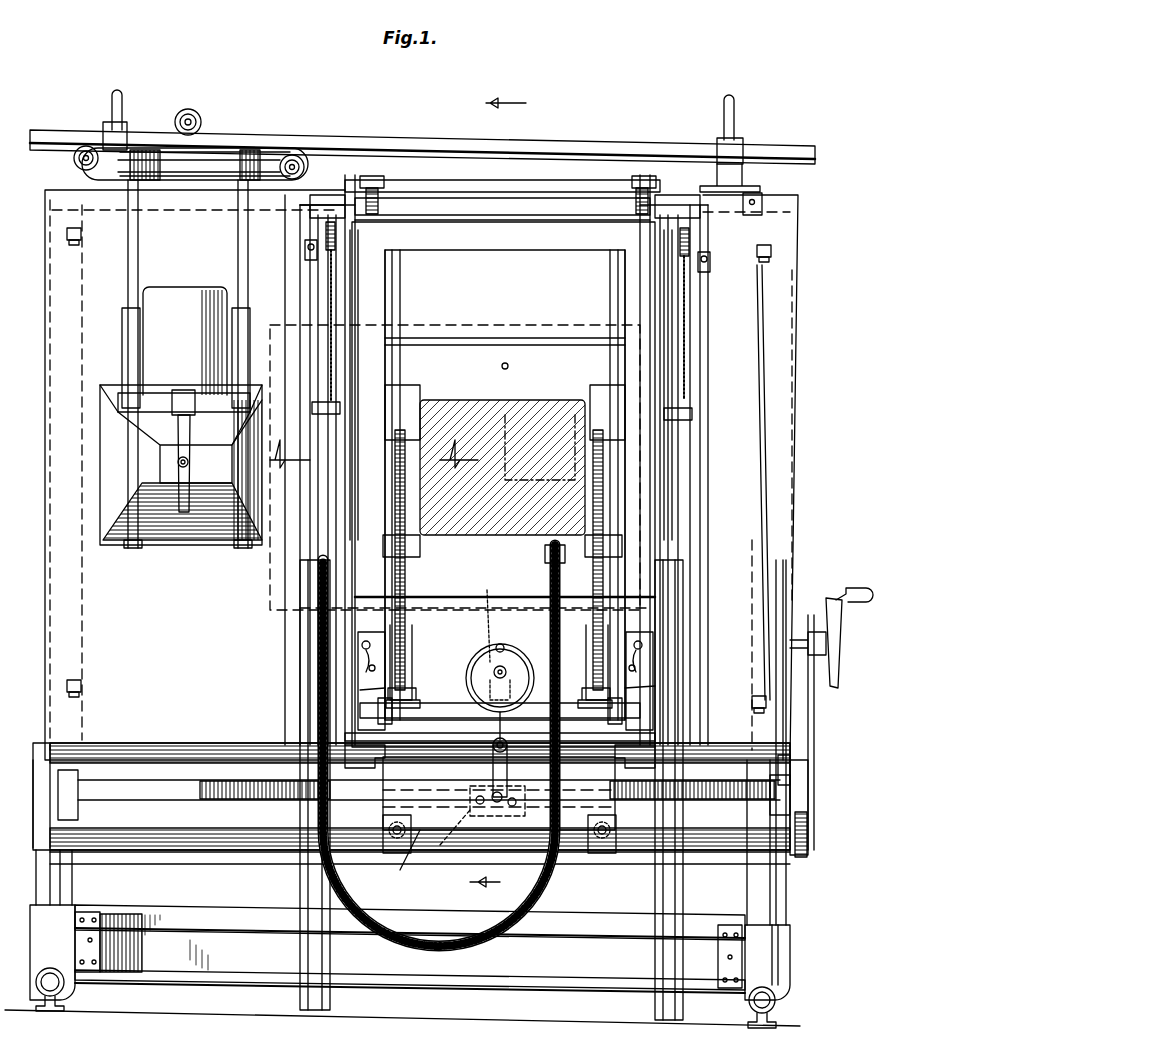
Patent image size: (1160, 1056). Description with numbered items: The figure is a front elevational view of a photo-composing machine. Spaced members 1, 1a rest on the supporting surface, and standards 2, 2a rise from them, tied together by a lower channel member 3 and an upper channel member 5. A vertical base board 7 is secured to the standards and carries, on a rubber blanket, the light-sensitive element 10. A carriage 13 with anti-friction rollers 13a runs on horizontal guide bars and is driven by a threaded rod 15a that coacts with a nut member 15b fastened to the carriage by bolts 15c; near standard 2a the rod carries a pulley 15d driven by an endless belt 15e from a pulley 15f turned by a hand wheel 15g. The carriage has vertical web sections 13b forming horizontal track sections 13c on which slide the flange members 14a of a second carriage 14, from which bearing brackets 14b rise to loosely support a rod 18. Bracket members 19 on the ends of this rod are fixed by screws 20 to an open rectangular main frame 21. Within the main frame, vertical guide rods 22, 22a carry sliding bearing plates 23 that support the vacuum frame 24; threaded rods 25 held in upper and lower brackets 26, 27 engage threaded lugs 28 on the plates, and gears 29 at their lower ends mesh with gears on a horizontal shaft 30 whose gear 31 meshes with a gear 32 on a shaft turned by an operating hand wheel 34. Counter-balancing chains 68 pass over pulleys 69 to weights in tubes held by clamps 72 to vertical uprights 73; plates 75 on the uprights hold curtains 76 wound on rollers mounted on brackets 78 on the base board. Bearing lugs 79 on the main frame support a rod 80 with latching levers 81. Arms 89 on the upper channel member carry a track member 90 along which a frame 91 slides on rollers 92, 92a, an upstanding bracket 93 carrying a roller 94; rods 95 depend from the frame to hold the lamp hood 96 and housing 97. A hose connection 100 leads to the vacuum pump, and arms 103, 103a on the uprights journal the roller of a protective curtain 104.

The spaced member 1 is at (60, 990).
The spaced member 1a is at (750, 1012).
The standard 2 is at (60, 880).
The standard 2a is at (790, 890).
The lower channel member 3 is at (475, 990).
The upper channel member 5 is at (498, 494).
The base board 7 is at (373, 454).
The light-sensitive element 10 is at (270, 605).
The carriage 13 is at (160, 845).
The anti-friction rollers 13a is at (397, 855).
The vertical web sections 13b is at (612, 855).
The horizontal track sections 13c is at (497, 763).
The second carriage 14 is at (450, 756).
The flange members 14a is at (392, 744).
The bearing brackets 14b is at (398, 712).
The threaded rod 15a is at (275, 808).
The nut member 15b is at (434, 862).
The bolts 15c is at (444, 827).
The pulley 15d is at (807, 822).
The endless belt 15e is at (814, 740).
The pulley 15f is at (810, 618).
The hand wheel 15g is at (858, 578).
The rod 18 is at (490, 750).
The bracket members 19 is at (358, 640).
The screws 20 is at (366, 660).
The main frame 21 is at (545, 250).
The vertical guide rod 22 is at (398, 292).
The vertical guide rod 22a is at (612, 292).
The bearing plate 23 is at (596, 390).
The vacuum frame 24 is at (478, 345).
The threaded rods 25 is at (412, 640).
The upper brackets 26 is at (405, 440).
The lower brackets 27 is at (412, 690).
The laterally projecting lug 28 is at (420, 548).
The gears 29 is at (360, 690).
The shaft 30 is at (492, 665).
The gear 31 is at (512, 705).
The gear 32 is at (490, 618).
The operating hand wheel 34 is at (525, 655).
The chains 68 is at (330, 265).
The pulleys 69 is at (326, 236).
The clamps 72 is at (312, 408).
The vertical uprights 73 is at (358, 238).
The plate 75 is at (325, 200).
The curtain 76 is at (188, 262).
The brackets 78 is at (81, 234).
The bearing lugs 79 is at (372, 168).
The rod 80 is at (572, 205).
The latching levers 81 is at (378, 195).
The spaced arms 89 is at (122, 98).
The track member 90 is at (606, 150).
The frame 91 is at (222, 162).
The roller 92 is at (74, 158).
The roller 92a is at (302, 163).
The upstanding bracket 93 is at (200, 145).
The roller 94 is at (192, 112).
The spaced rods 95 is at (128, 284).
The lamp hood 96 is at (170, 540).
The housing 97 is at (148, 355).
The hose connection 100 is at (562, 900).
The arm 103 is at (310, 205).
The arm 103a is at (655, 222).
The curtain 104 is at (495, 192).